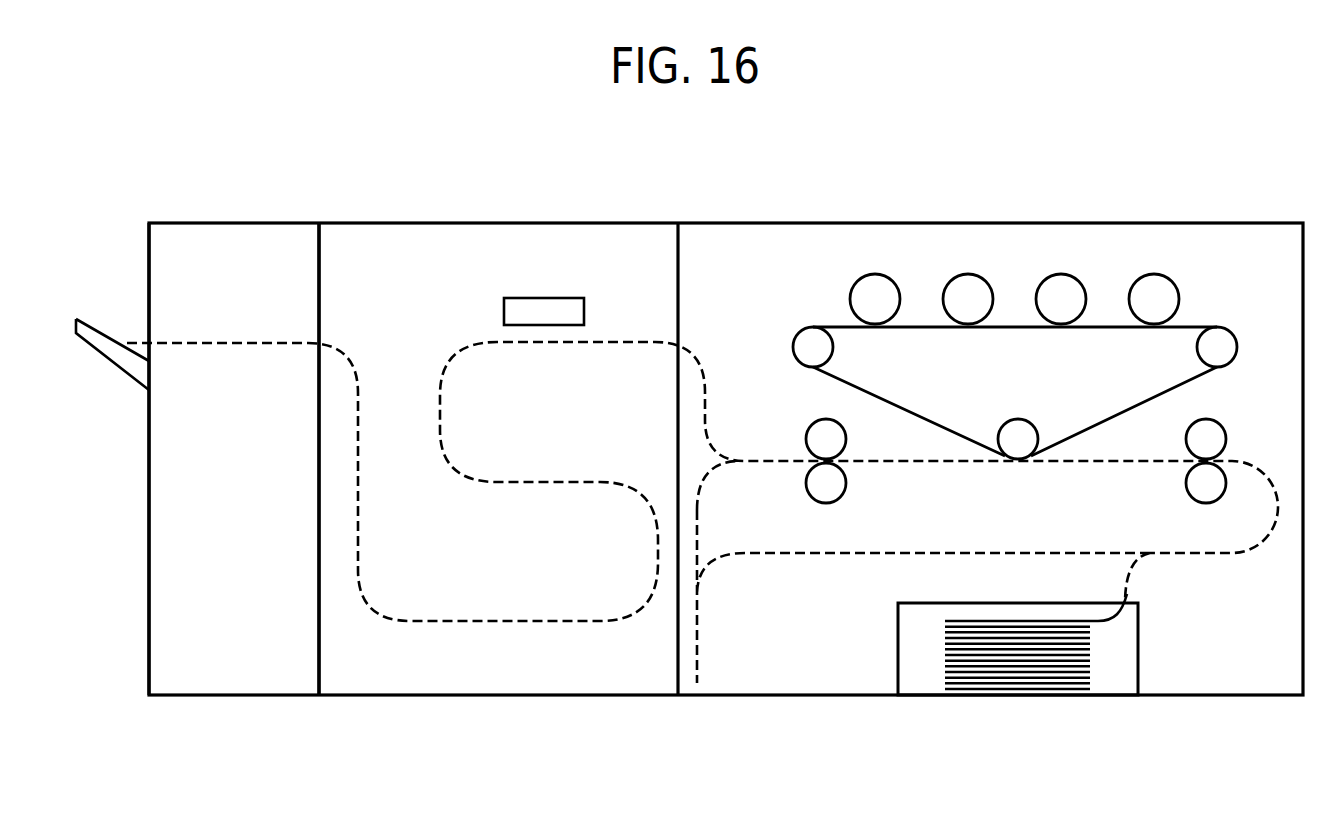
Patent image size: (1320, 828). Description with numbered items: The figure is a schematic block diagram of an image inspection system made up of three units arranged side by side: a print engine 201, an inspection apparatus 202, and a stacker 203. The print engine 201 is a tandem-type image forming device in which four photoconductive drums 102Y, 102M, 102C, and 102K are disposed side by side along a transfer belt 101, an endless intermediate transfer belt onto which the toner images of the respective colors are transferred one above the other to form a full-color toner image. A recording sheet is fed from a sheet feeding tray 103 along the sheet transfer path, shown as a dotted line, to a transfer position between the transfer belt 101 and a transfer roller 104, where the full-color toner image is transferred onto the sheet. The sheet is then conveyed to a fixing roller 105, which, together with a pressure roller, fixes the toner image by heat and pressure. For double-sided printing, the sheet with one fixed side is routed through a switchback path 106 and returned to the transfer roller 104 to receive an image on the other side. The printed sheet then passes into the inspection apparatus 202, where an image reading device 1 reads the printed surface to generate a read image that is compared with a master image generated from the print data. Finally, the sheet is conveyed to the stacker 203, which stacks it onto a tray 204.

The image reading device 1 is at (585, 313).
The transfer belt 101 is at (898, 406).
The photoconductive drum 102K is at (878, 276).
The photoconductive drum 102C is at (971, 276).
The photoconductive drum 102M is at (1064, 276).
The photoconductive drum 102Y is at (1157, 276).
The sheet feeding tray 103 is at (1140, 650).
The transfer roller 104 is at (1016, 419).
The fixing roller 105 is at (846, 437).
The switchback path 106 is at (700, 643).
The print engine 201 is at (1229, 223).
The inspection apparatus 202 is at (609, 223).
The stacker 203 is at (262, 223).
The tray 204 is at (92, 327).